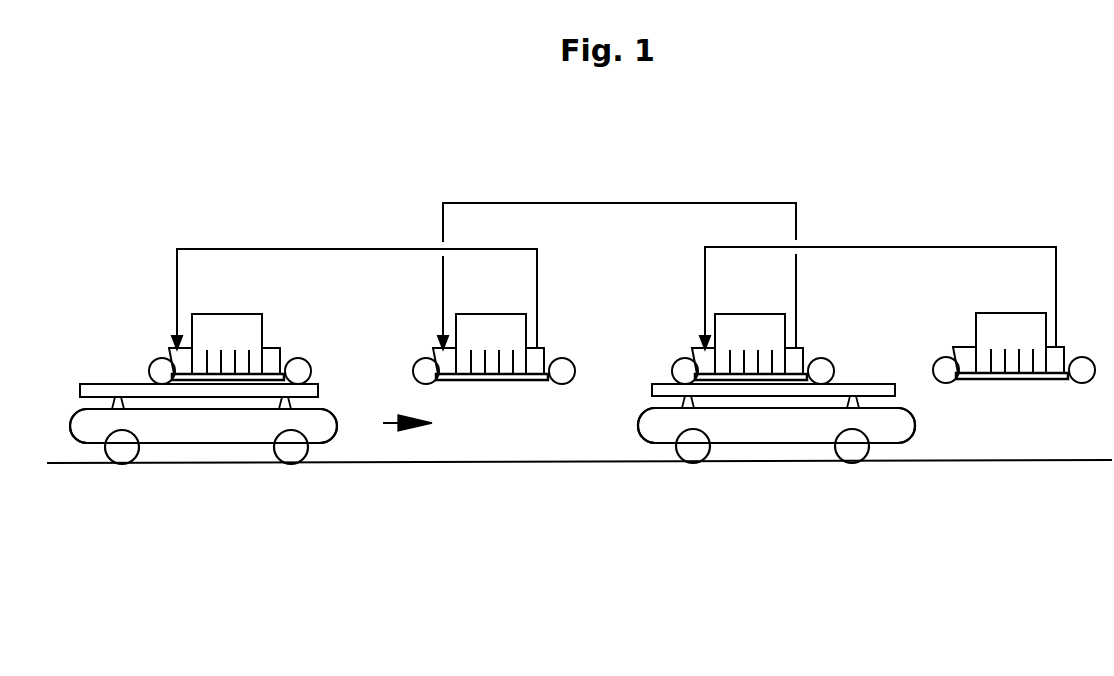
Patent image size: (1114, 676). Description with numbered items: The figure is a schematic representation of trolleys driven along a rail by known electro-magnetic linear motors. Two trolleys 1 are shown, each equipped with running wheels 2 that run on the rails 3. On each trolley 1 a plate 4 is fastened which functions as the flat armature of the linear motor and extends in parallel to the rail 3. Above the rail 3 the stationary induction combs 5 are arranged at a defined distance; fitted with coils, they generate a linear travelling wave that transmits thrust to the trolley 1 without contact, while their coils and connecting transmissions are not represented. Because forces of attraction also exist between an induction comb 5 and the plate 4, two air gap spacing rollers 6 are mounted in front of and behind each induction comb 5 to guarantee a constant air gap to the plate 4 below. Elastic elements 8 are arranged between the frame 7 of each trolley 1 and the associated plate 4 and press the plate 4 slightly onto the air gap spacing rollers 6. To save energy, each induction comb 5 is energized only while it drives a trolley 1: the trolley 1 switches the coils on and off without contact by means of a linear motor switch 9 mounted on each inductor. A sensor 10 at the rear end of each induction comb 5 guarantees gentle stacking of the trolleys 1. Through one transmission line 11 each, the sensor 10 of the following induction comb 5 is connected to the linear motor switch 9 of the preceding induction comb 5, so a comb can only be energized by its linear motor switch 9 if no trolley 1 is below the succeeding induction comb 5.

The trolley 1 is at (200, 445).
The running wheels 2 is at (122, 452).
The rails 3 is at (500, 463).
The plate 4 is at (92, 390).
The induction comb 5 is at (230, 333).
The air gap spacing rollers 6 is at (158, 364).
The frame 7 is at (159, 427).
The elastic elements 8 is at (110, 403).
The linear motor switch 9 is at (187, 362).
The sensor 10 is at (275, 357).
The transmission line 11 is at (353, 249).